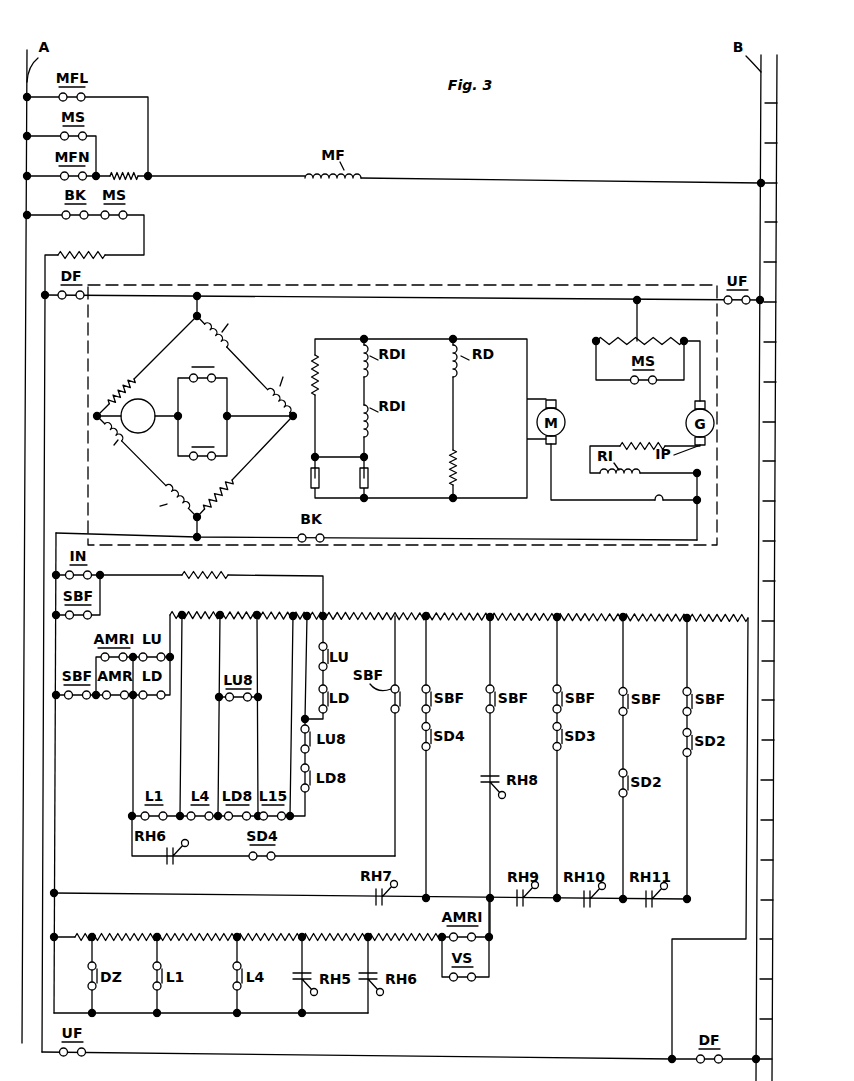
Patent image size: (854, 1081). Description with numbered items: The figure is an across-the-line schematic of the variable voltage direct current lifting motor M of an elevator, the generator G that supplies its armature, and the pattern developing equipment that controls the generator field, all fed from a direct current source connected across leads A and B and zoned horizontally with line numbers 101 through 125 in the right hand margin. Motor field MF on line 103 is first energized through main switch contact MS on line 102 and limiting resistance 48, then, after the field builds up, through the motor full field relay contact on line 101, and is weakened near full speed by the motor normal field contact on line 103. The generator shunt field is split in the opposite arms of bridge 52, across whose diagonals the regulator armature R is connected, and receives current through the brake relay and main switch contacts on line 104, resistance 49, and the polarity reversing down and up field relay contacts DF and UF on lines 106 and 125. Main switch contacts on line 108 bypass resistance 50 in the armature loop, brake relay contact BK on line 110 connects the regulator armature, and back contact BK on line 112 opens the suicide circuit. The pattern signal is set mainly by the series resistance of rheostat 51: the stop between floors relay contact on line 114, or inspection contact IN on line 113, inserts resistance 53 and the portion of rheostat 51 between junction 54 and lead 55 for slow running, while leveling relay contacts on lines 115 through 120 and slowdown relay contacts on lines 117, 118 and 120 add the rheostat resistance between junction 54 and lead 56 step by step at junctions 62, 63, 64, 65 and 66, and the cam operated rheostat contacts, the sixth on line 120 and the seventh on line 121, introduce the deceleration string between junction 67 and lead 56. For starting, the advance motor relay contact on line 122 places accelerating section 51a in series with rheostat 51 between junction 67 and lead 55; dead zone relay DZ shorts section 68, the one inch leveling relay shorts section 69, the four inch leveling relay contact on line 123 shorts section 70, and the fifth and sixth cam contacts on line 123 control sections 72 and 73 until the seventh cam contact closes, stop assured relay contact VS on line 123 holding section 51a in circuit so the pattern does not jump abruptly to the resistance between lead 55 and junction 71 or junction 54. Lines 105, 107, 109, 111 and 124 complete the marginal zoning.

The limiting resistance 48 is at (114, 173).
The resistance 49 is at (83, 253).
The resistance 50 is at (660, 340).
The rheostat 51 is at (507, 602).
The start section of rheostat 51a is at (244, 925).
The bridge 52 is at (187, 485).
The resistance 53 is at (226, 574).
The junction 54 is at (325, 612).
The lead 55 is at (747, 626).
The lead 56 is at (57, 657).
The junction 62 is at (307, 613).
The junction 63 is at (292, 613).
The junction 64 is at (257, 611).
The junction 65 is at (220, 611).
The junction 66 is at (184, 611).
The junction 67 is at (427, 612).
The rheostat section 68 is at (88, 935).
The rheostat section 69 is at (136, 935).
The resistor tap 70 is at (191, 935).
The junction 71 is at (394, 612).
The rheostat section 72 is at (330, 935).
The rheostat section 73 is at (394, 935).
The line 101 is at (790, 104).
The line 102 is at (790, 144).
The line 103 is at (790, 184).
The line 104 is at (790, 223).
The circuit line 105 is at (789, 263).
The line 106 is at (789, 303).
The circuit line 107 is at (789, 343).
The line 108 is at (789, 383).
The circuit line 109 is at (788, 423).
The line 110 is at (788, 462).
The circuit line 111 is at (788, 502).
The line 112 is at (788, 542).
The line 113 is at (788, 582).
The line 114 is at (787, 622).
The line 115 is at (787, 662).
The line 116 is at (787, 701).
The line 117 is at (787, 741).
The line 118 is at (786, 781).
The line 119 is at (786, 821).
The line 120 is at (786, 861).
The line 121 is at (786, 901).
The line 122 is at (785, 940).
The line 123 is at (785, 980).
The circuit line 124 is at (785, 1020).
The line 125 is at (785, 1060).